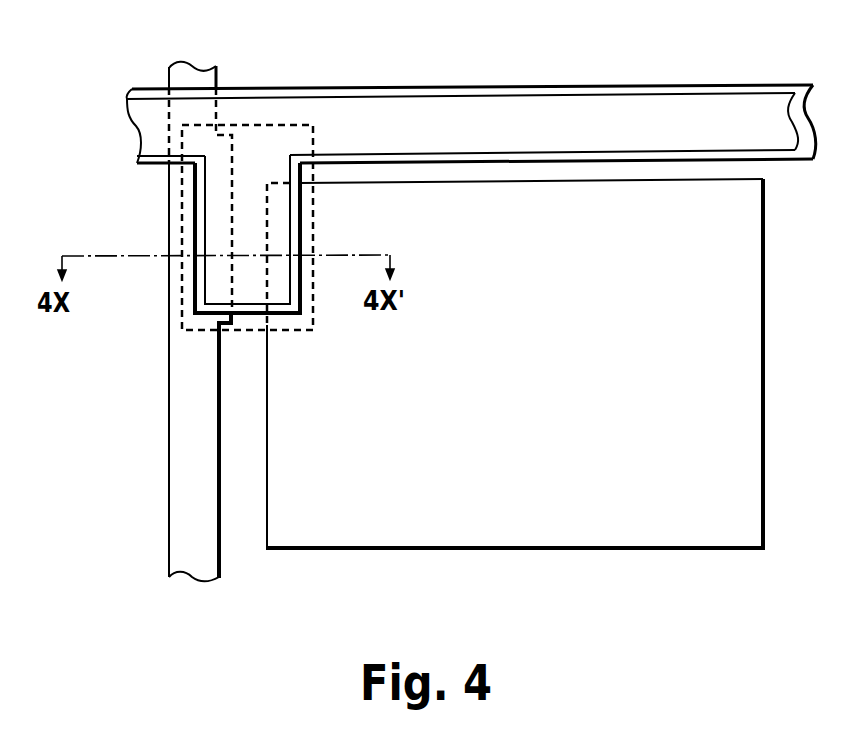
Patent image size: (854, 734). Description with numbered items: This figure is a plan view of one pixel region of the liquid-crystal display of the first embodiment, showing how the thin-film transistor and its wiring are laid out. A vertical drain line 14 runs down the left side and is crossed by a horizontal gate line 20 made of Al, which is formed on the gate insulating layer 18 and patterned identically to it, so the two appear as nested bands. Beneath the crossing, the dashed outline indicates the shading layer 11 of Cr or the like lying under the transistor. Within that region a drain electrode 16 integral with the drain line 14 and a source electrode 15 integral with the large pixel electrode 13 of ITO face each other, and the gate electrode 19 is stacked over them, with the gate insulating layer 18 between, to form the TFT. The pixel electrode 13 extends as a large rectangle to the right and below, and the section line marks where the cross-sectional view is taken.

The shading layer 11 is at (248, 123).
The pixel electrode 13 is at (466, 204).
The drain line 14 is at (198, 400).
The source electrode 15 is at (272, 281).
The drain electrode 16 is at (215, 193).
The gate insulating layer 18 is at (563, 90).
The gate electrode 19 is at (237, 235).
The gate line 20 is at (684, 123).